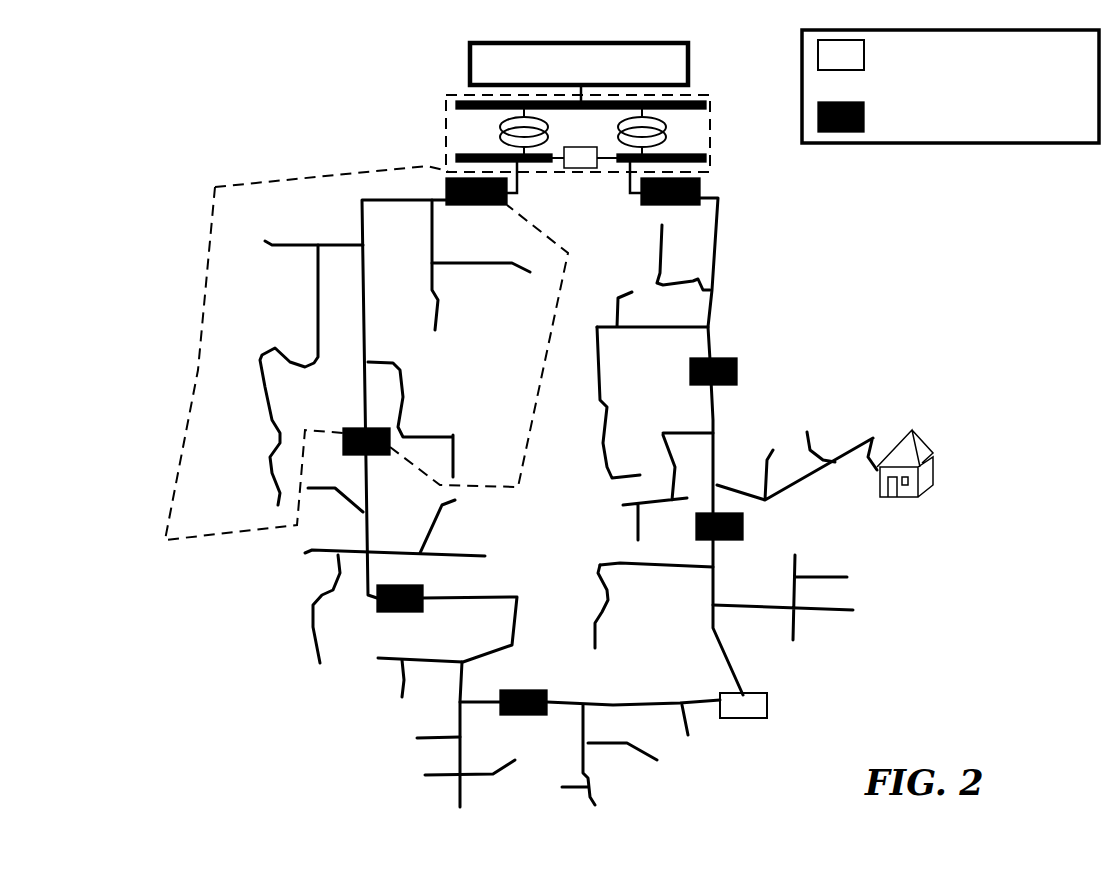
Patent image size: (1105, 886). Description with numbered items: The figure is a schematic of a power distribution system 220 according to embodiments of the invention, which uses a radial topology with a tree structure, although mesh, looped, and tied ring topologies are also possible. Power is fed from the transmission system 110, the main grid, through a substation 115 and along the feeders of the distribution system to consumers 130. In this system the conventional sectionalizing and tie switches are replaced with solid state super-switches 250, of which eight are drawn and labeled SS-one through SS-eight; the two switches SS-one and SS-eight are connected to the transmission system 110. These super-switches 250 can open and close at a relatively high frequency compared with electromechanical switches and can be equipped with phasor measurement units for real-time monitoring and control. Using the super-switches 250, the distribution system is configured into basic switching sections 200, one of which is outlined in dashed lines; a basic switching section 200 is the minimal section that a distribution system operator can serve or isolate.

The transmission system 110 is at (468, 80).
The substation 115 is at (690, 80).
The basic switching section 200 is at (210, 248).
The power distribution system 220 is at (845, 400).
The consumers 130 is at (935, 475).
The super-switches 250 is at (903, 145).